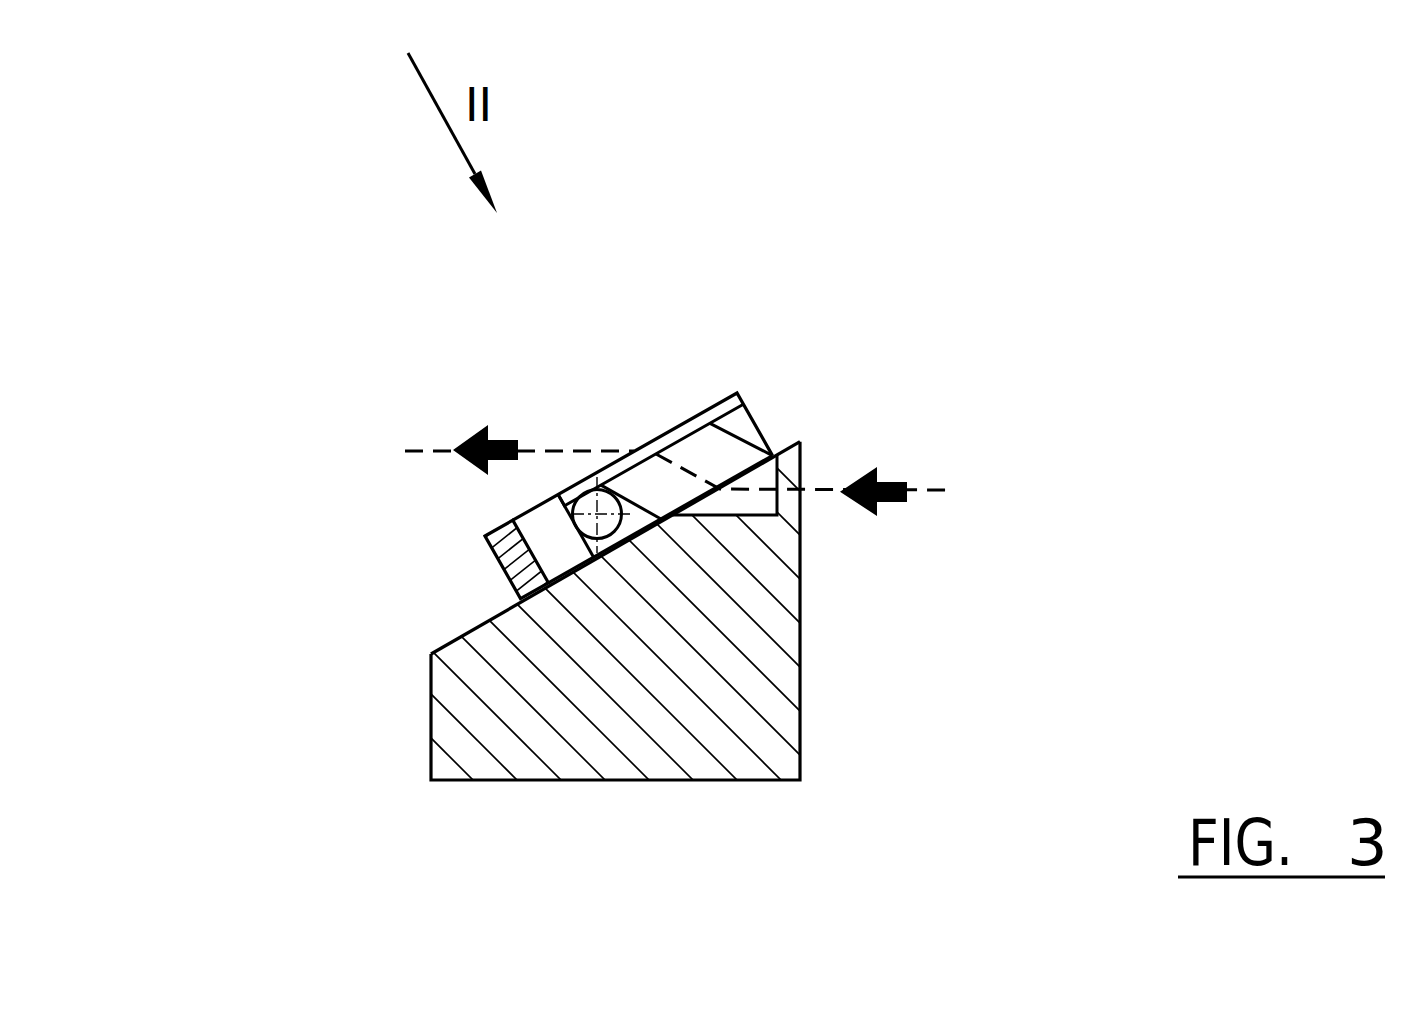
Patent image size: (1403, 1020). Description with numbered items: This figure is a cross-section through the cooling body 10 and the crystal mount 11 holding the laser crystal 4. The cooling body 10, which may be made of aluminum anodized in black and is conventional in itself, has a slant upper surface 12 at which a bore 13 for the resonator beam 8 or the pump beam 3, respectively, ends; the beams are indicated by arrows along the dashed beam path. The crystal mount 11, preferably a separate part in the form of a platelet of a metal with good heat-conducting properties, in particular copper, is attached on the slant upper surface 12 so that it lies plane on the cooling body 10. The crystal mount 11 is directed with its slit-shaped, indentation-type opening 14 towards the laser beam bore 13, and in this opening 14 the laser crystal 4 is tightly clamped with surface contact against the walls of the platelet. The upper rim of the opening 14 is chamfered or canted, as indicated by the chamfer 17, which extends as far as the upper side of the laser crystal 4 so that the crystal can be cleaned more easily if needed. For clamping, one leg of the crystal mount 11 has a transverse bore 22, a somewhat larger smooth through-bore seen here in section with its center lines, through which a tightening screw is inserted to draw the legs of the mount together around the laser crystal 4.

The pump beam 3 is at (933, 429).
The laser crystal 4 is at (698, 448).
The resonator beam 8 is at (410, 451).
The cooling body 10 is at (780, 660).
The crystal mount 11 is at (382, 535).
The slant upper surface 12 is at (481, 548).
The bore 13 is at (781, 473).
The slit-shaped opening 14 is at (740, 427).
The chamfer 17 is at (681, 434).
The transverse bore 22 is at (577, 497).